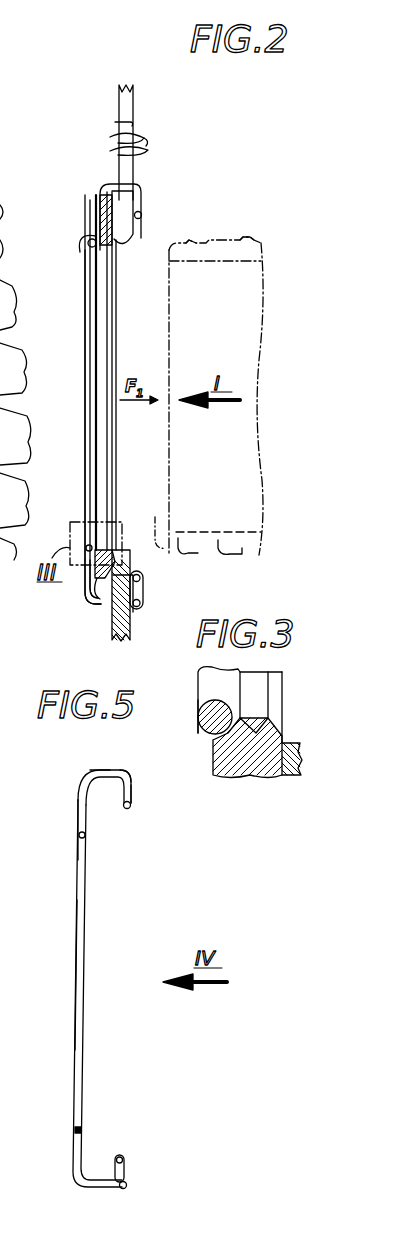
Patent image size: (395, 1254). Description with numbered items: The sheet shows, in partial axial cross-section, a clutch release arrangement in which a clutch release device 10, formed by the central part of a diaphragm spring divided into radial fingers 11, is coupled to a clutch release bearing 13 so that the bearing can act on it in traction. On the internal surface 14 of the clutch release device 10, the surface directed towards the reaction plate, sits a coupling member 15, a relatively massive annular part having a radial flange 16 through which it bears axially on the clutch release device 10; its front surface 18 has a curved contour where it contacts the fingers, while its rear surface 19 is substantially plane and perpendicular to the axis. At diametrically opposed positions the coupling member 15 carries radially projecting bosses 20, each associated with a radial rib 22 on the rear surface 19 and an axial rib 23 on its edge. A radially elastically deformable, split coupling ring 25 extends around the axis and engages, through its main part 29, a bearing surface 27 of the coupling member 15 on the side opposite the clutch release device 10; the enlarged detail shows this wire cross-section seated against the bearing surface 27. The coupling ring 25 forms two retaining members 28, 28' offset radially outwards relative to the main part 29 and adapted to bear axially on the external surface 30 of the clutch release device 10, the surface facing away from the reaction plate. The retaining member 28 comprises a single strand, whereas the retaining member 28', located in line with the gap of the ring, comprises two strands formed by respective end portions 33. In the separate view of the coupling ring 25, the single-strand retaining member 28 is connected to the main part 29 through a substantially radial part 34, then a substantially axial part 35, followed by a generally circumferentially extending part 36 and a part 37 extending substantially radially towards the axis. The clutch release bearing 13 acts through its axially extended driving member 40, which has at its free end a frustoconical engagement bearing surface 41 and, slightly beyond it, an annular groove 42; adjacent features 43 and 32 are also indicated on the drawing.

In FIG. 2, the clutch release device 10 is at (144, 122).
In FIG. 3, the clutch release device 10 is at (296, 743).
In FIG. 2, the radial fingers 11 is at (118, 643).
In FIG. 2, the clutch release bearing 13 is at (255, 242).
In FIG. 2, the internal surface 14 is at (144, 149).
In FIG. 2, the coupling member 15 is at (118, 355).
In FIG. 3, the coupling member 15 is at (260, 777).
In FIG. 2, the radial flange 16 is at (112, 565).
In FIG. 3, the radial flange 16 is at (241, 766).
In FIG. 2, the front surface 18 is at (126, 236).
In FIG. 2, the rear surface 19 is at (84, 588).
In FIG. 2, the radially projecting bosses 20 is at (128, 205).
In FIG. 2, the radial rib 22 is at (84, 244).
In FIG. 2, the axial rib 23 is at (100, 188).
In FIG. 2, the coupling ring 25 is at (86, 385).
In FIG. 3, the coupling ring 25 is at (198, 694).
In FIG. 5, the coupling ring 25 is at (74, 925).
In FIG. 3, the bearing surface 27 is at (215, 734).
In FIG. 2, the retaining member 28 is at (164, 223).
In FIG. 5, the retaining member 28 is at (150, 811).
In FIG. 2, the retaining member 28' is at (162, 589).
In FIG. 5, the retaining member 28' is at (157, 1171).
In FIG. 2, the main part 29 is at (88, 322).
In FIG. 3, the main part 29 is at (208, 711).
In FIG. 5, the main part 29 is at (76, 978).
In FIG. 2, the external surface 30 is at (117, 137).
In FIG. 2, the retaining ring 32 is at (115, 122).
In FIG. 5, the end portions 33 is at (116, 1178).
In FIG. 5, the radial part 34 is at (77, 802).
In FIG. 5, the axial part 35 is at (100, 770).
In FIG. 5, the circumferentially extending part 36 is at (128, 781).
In FIG. 5, the radial part 37 is at (134, 797).
In FIG. 2, the driving member 40 is at (211, 244).
In FIG. 2, the frustoconical engagement bearing surface 41 is at (151, 521).
In FIG. 2, the annular groove 42 is at (194, 538).
In FIG. 2, the pane lower hook 43 is at (219, 538).